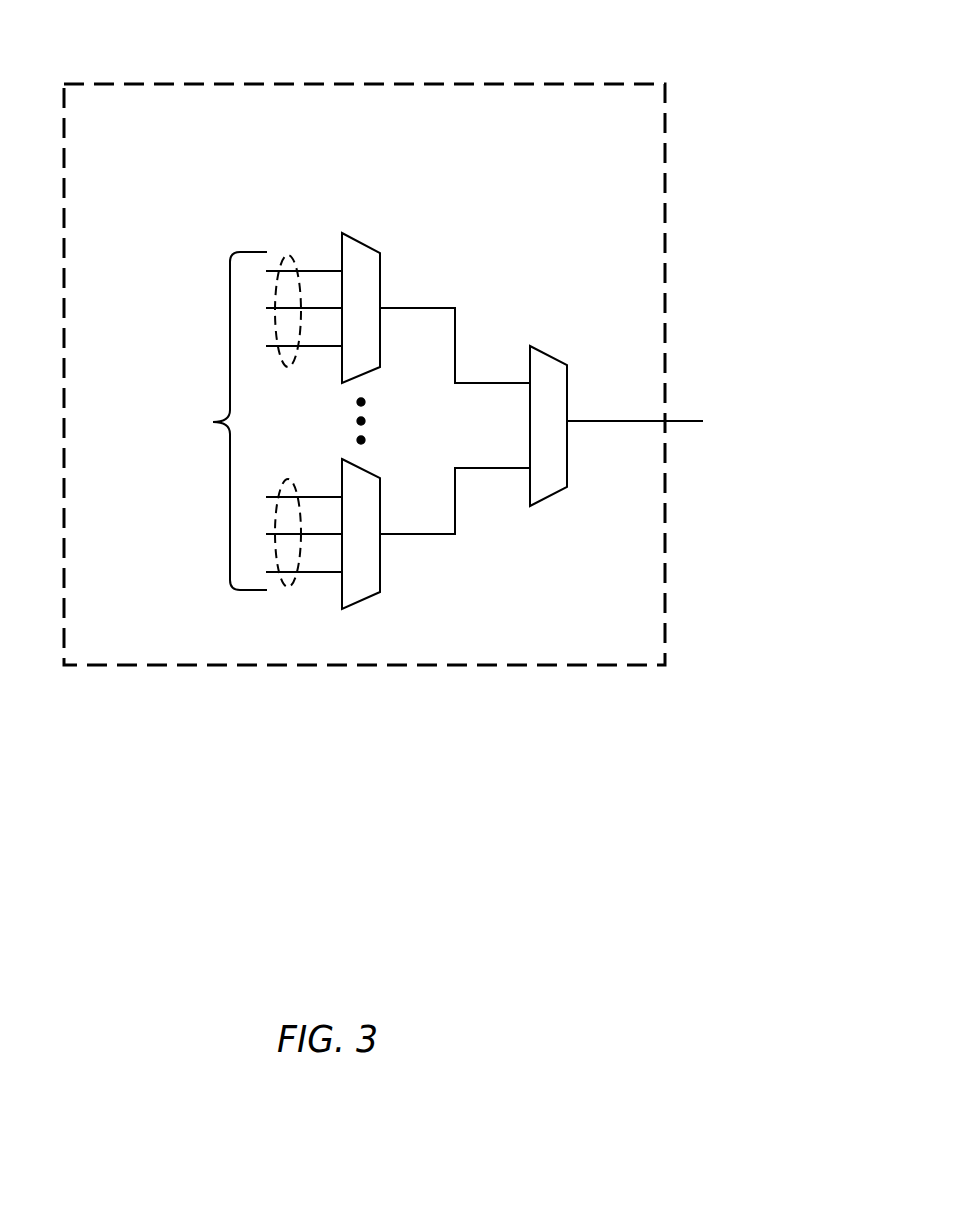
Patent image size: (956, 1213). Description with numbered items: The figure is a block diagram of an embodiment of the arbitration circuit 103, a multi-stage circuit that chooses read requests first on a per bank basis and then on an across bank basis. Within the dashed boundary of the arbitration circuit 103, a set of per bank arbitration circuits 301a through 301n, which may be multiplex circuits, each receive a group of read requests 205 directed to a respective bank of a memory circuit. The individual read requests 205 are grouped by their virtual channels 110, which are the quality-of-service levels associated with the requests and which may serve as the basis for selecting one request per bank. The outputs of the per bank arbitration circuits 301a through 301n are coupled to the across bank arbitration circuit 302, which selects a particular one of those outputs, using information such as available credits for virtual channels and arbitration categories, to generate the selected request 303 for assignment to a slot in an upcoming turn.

The arbitration circuit 103 is at (462, 84).
The read requests 205 is at (217, 421).
The quality-of-service levels 110 is at (290, 367).
The per bank arbitration circuit 301a is at (370, 245).
The per bank arbitration circuit 301n is at (381, 578).
The across bank arbitration circuit 302 is at (557, 360).
The selected request 303 is at (688, 423).